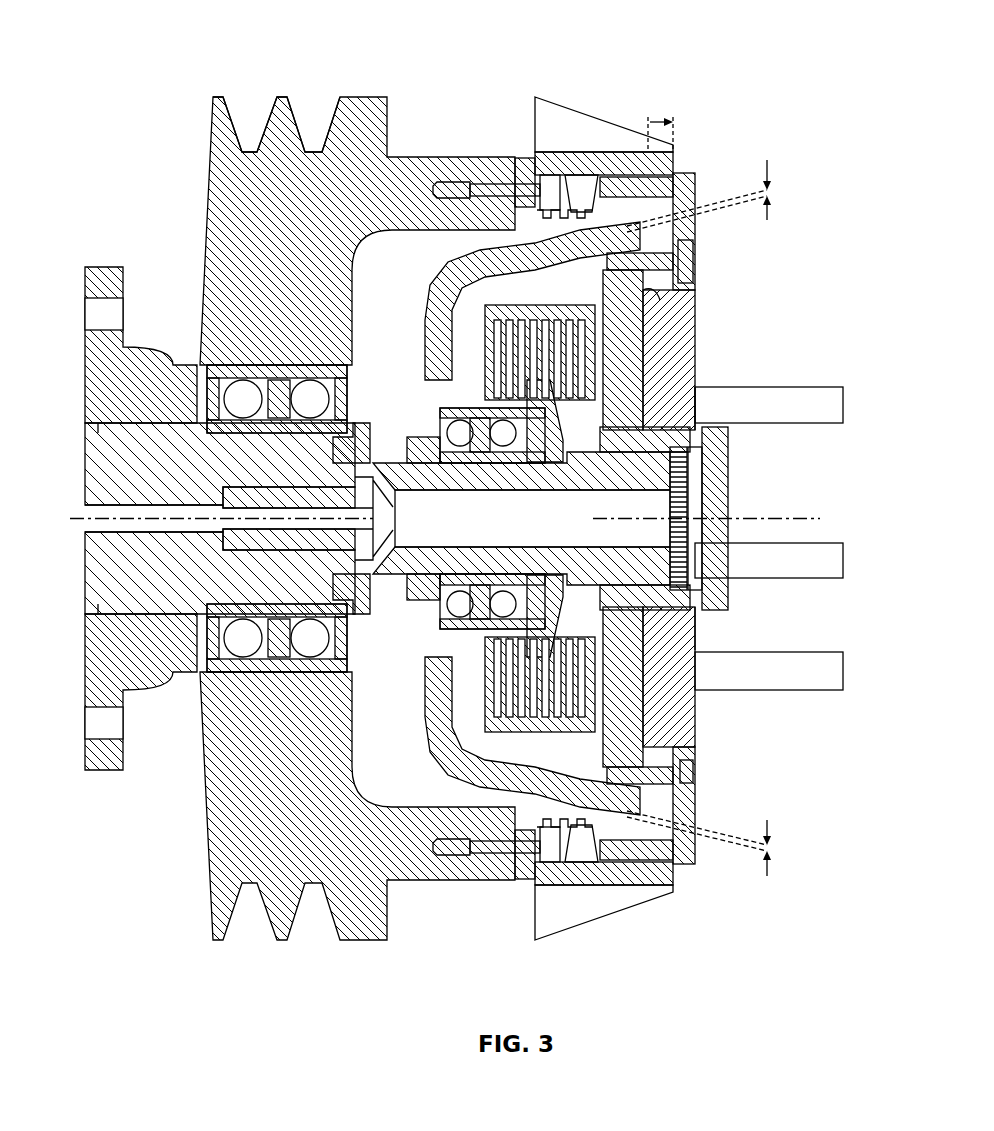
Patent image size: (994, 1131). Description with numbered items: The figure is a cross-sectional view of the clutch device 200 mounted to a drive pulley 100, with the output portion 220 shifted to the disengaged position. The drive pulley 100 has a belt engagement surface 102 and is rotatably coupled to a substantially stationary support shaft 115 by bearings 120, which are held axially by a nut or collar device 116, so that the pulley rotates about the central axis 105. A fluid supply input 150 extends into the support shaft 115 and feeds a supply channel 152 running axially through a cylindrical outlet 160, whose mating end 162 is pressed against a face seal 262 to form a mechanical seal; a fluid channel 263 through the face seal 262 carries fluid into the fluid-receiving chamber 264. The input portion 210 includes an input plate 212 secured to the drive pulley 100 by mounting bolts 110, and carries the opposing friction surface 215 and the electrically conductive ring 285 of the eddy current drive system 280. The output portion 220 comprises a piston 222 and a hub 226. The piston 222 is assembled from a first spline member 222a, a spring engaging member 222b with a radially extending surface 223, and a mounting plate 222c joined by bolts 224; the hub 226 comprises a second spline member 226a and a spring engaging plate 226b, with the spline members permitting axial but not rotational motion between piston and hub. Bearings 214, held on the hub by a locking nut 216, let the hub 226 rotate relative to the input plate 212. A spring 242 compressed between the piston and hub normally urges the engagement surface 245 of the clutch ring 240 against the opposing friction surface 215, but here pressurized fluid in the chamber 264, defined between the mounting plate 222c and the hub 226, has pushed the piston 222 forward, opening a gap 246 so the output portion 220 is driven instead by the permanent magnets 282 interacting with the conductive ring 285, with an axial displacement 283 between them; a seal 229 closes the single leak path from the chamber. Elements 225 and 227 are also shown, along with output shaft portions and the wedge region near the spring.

The drive pulley 100 is at (216, 56).
The belt engagement surface 102 is at (262, 110).
The central axis 105 is at (86, 517).
The mounting bolts 110 is at (483, 190).
The support shaft 115 is at (85, 357).
The nut or collar device 116 is at (362, 427).
The bearings 120 is at (247, 378).
The fluid supply input 150 is at (98, 524).
The supply channel 152 is at (205, 612).
The cylindrical outlet 160 is at (245, 495).
The mating end 162 is at (380, 520).
The clutch device 200 is at (742, 43).
The input portion 210 is at (445, 273).
The input plate 212 is at (523, 177).
The bearing 214 is at (425, 395).
The opposing friction surface 215 is at (560, 182).
The locking nut 216 is at (440, 440).
The output portion 220 is at (783, 262).
The piston 222 is at (708, 316).
The first spline member 222a is at (705, 405).
The spring engaging member 222b is at (658, 305).
The mounting plate 222c is at (682, 338).
The radially extending surface 223 is at (610, 697).
The bolts 224 is at (686, 278).
The output shaft 225 is at (813, 413).
The hub 226 is at (650, 697).
The second spline member 226a is at (660, 687).
The spring engaging plate 226b is at (673, 742).
The wedge 227 is at (560, 785).
The seal 229 is at (695, 767).
The clutch ring 240 is at (680, 250).
The spring 242 is at (497, 702).
The engagement surface 245 is at (608, 180).
The gap 246 is at (770, 185).
The face seal 262 is at (365, 575).
The fluid channel 263 is at (545, 532).
The fluid-receiving chamber 264 is at (693, 470).
The eddy current drive system 280 is at (700, 928).
The permanent magnets 282 is at (673, 852).
The displacement 283 is at (664, 122).
The electrically conductive ring 285 is at (657, 877).